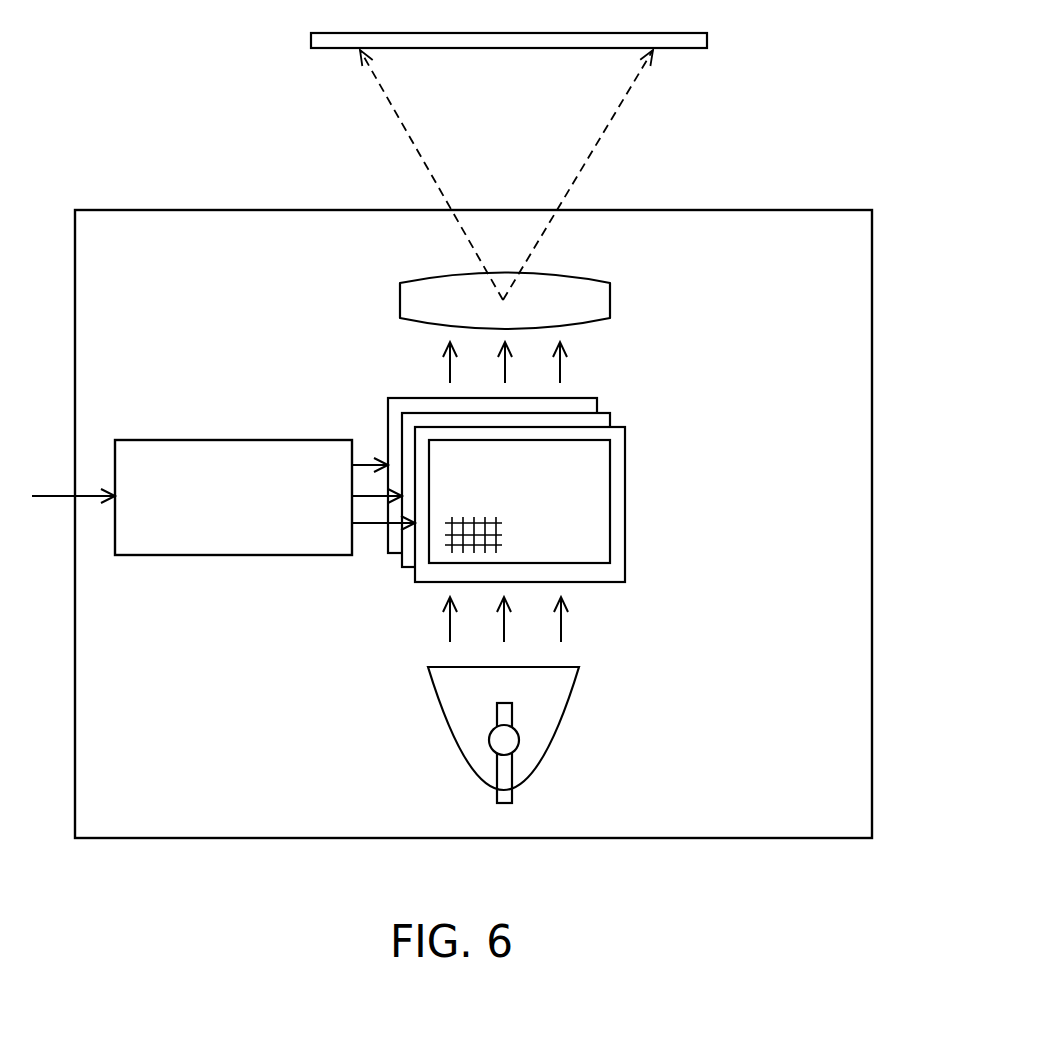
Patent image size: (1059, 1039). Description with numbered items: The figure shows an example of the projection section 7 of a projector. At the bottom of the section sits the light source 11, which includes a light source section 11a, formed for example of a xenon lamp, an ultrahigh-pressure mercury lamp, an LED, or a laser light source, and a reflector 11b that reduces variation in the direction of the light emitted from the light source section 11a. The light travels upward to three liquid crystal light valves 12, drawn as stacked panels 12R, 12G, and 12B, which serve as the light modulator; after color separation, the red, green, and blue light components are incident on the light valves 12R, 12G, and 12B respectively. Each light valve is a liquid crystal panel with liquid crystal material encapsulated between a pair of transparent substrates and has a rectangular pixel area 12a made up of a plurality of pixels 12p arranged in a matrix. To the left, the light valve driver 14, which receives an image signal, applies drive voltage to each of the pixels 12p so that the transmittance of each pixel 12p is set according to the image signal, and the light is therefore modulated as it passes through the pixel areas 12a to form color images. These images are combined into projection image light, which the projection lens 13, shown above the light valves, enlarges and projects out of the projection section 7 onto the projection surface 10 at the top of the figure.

The projection section 7 is at (128, 210).
The projection surface 10 is at (677, 49).
The light source 11 is at (533, 747).
The light source section 11a is at (512, 742).
The reflector 11b is at (448, 758).
The liquid crystal light valves 12 is at (590, 497).
The liquid crystal light valve 12B is at (583, 405).
The liquid crystal light valve 12G is at (597, 422).
The liquid crystal light valve 12R is at (618, 479).
The pixel area 12a is at (590, 528).
The pixels 12p is at (455, 540).
The projection lens 13 is at (592, 301).
The light valve driver 14 is at (278, 440).